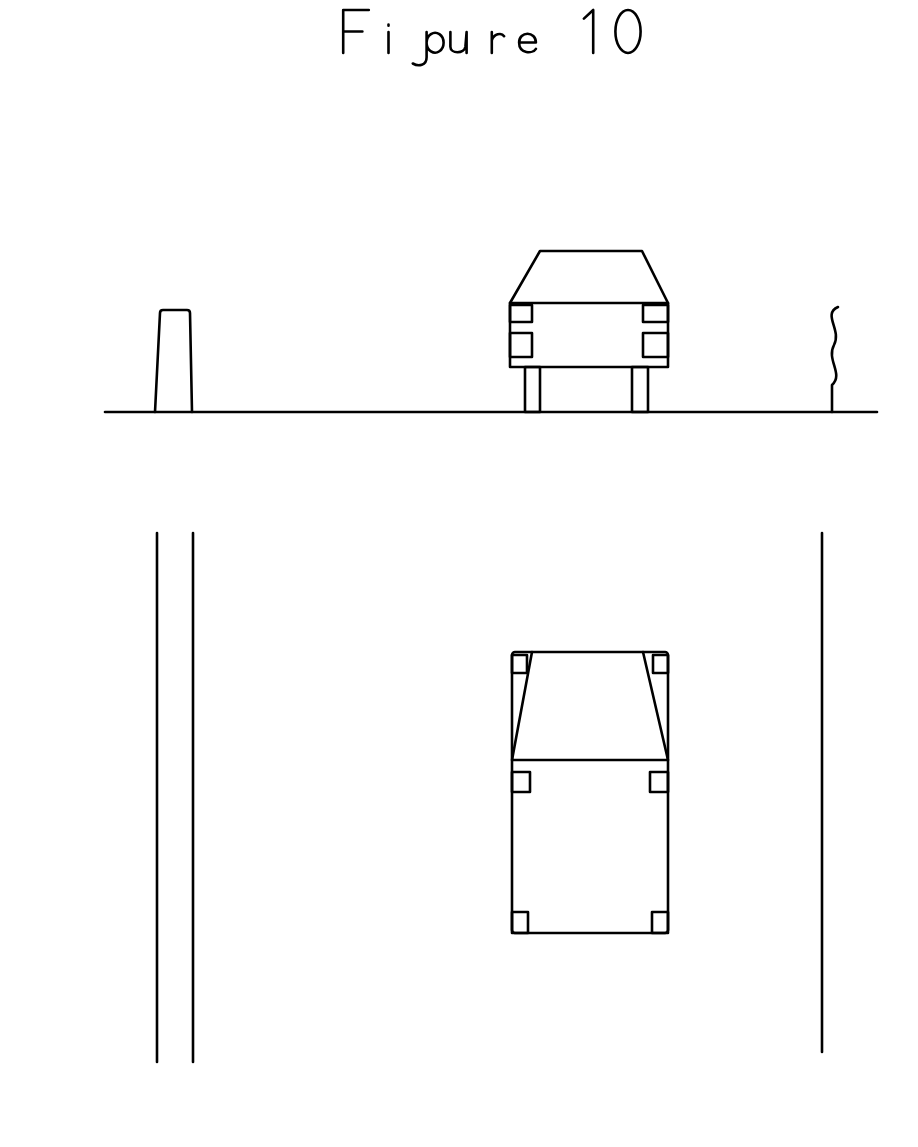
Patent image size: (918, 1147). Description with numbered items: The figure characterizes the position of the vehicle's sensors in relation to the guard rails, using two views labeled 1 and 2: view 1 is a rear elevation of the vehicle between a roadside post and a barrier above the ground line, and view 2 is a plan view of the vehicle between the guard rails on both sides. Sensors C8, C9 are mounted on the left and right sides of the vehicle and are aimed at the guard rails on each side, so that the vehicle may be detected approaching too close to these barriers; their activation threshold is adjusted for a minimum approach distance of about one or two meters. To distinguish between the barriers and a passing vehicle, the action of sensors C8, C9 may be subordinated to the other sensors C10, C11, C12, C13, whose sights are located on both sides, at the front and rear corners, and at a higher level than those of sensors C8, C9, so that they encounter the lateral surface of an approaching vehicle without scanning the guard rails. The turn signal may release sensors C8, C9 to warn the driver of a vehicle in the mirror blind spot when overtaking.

The side view of vehicle with sensor fields 1 is at (38, 393).
The plan view of vehicle with sensor fields 2 is at (65, 790).
The sensor C8 is at (192, 345).
The sensor C9 is at (734, 837).
The sensor C10 is at (140, 292).
The sensor C11 is at (150, 987).
The sensor C12 is at (865, 291).
The sensor C13 is at (870, 953).